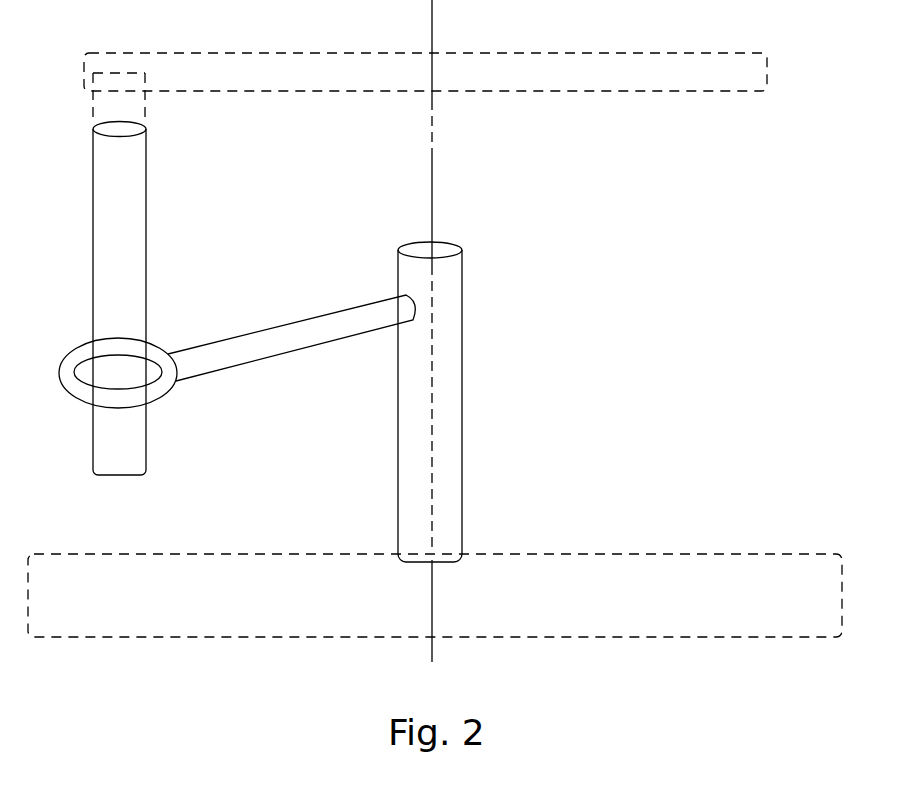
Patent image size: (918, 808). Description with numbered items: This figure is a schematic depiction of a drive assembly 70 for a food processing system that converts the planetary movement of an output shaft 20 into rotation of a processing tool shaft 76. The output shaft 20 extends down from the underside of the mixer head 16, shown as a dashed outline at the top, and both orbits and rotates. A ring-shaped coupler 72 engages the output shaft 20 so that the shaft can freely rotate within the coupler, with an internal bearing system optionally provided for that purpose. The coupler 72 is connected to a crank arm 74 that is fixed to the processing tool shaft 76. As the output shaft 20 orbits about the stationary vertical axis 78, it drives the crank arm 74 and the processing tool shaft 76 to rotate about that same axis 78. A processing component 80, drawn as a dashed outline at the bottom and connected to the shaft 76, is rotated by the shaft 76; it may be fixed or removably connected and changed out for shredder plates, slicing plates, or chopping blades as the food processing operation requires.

The mixer head 16 is at (265, 58).
The output shaft 20 is at (138, 215).
The drive assembly 70 is at (452, 167).
The ring-shaped coupler 72 is at (160, 345).
The crank arm 74 is at (265, 352).
The processing tool shaft 76 is at (447, 352).
The axis 78 is at (432, 215).
The processing component 80 is at (565, 552).